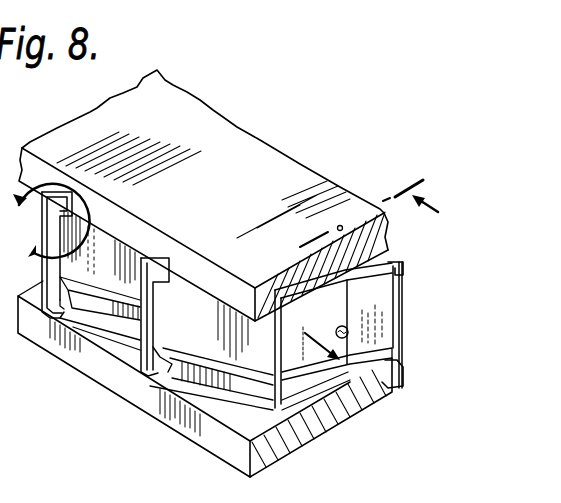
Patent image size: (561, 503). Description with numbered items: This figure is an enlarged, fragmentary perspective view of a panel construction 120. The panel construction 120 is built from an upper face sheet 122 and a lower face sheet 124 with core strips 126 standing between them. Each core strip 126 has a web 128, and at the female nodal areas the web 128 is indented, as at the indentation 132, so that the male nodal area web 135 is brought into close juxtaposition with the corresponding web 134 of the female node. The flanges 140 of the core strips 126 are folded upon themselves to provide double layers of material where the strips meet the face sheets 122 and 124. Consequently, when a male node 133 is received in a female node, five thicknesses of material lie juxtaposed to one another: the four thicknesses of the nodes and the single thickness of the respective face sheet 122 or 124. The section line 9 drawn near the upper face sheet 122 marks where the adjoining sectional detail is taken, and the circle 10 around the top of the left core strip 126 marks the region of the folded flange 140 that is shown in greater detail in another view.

The section line for FIG. 9 is at (377, 270).
The detail area of FIG. 10 is at (46, 221).
The panel construction 120 is at (148, 430).
The face sheet 122 is at (234, 147).
The face sheet 124 is at (217, 447).
The core strip 126 is at (406, 338).
The web 128 is at (401, 300).
The indentation 132 is at (135, 362).
The male node 133 is at (162, 357).
The web of female node 134 is at (137, 337).
The male nodal area web 135 is at (158, 305).
The flange 140 is at (406, 260).